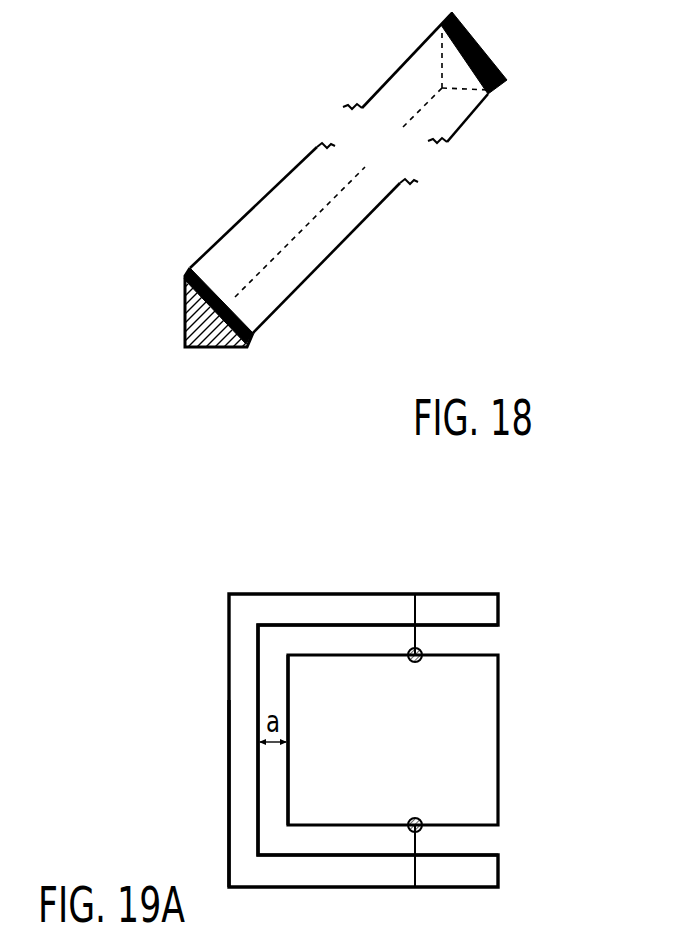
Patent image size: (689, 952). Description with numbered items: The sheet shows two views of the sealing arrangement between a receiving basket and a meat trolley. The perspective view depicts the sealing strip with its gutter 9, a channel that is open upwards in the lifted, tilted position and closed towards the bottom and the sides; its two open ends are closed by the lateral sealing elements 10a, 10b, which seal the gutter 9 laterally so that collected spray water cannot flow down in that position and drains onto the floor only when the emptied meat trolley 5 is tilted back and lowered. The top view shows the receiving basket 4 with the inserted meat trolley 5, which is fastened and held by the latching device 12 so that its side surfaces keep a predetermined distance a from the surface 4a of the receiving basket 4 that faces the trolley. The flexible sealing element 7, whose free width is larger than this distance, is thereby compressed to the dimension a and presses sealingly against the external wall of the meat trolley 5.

In FIG. 18, the gutter 9 is at (368, 198).
In FIG. 18, the lateral sealing element 10a is at (205, 348).
In FIG. 18, the lateral sealing element 10b is at (484, 47).
In FIG. 19A, the receiving basket 4 is at (246, 604).
In FIG. 19A, the surface facing the container 4a is at (258, 819).
In FIG. 19A, the sealing element 7 is at (278, 638).
In FIG. 19A, the meat trolley 5 is at (487, 735).
In FIG. 19A, the latching device 12 is at (417, 607).